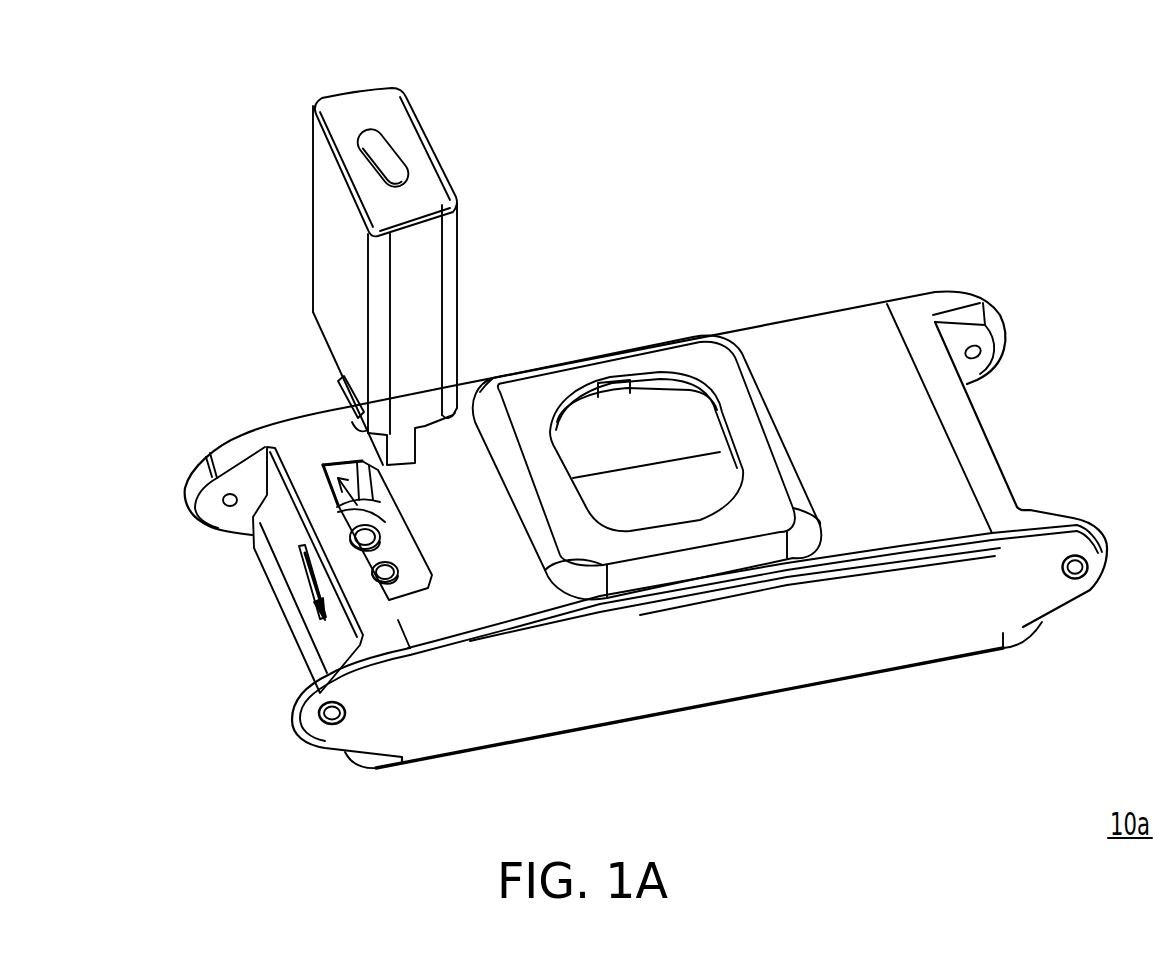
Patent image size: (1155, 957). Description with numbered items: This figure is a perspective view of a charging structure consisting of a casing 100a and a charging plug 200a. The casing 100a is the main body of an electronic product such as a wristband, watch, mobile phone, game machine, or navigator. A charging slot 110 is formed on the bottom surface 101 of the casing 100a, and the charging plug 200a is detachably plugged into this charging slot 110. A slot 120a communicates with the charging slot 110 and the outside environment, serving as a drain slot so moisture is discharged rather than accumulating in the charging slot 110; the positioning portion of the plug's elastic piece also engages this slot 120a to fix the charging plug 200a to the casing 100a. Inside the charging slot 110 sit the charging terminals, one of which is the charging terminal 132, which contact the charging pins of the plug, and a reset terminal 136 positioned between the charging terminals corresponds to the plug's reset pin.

The casing 100a is at (820, 340).
The bottom surface 101 is at (772, 354).
The charging slot 110 is at (363, 453).
The slot 120a is at (310, 593).
The charging terminal 132 is at (358, 535).
The reset terminal 136 is at (378, 570).
The charging plug 200a is at (385, 118).